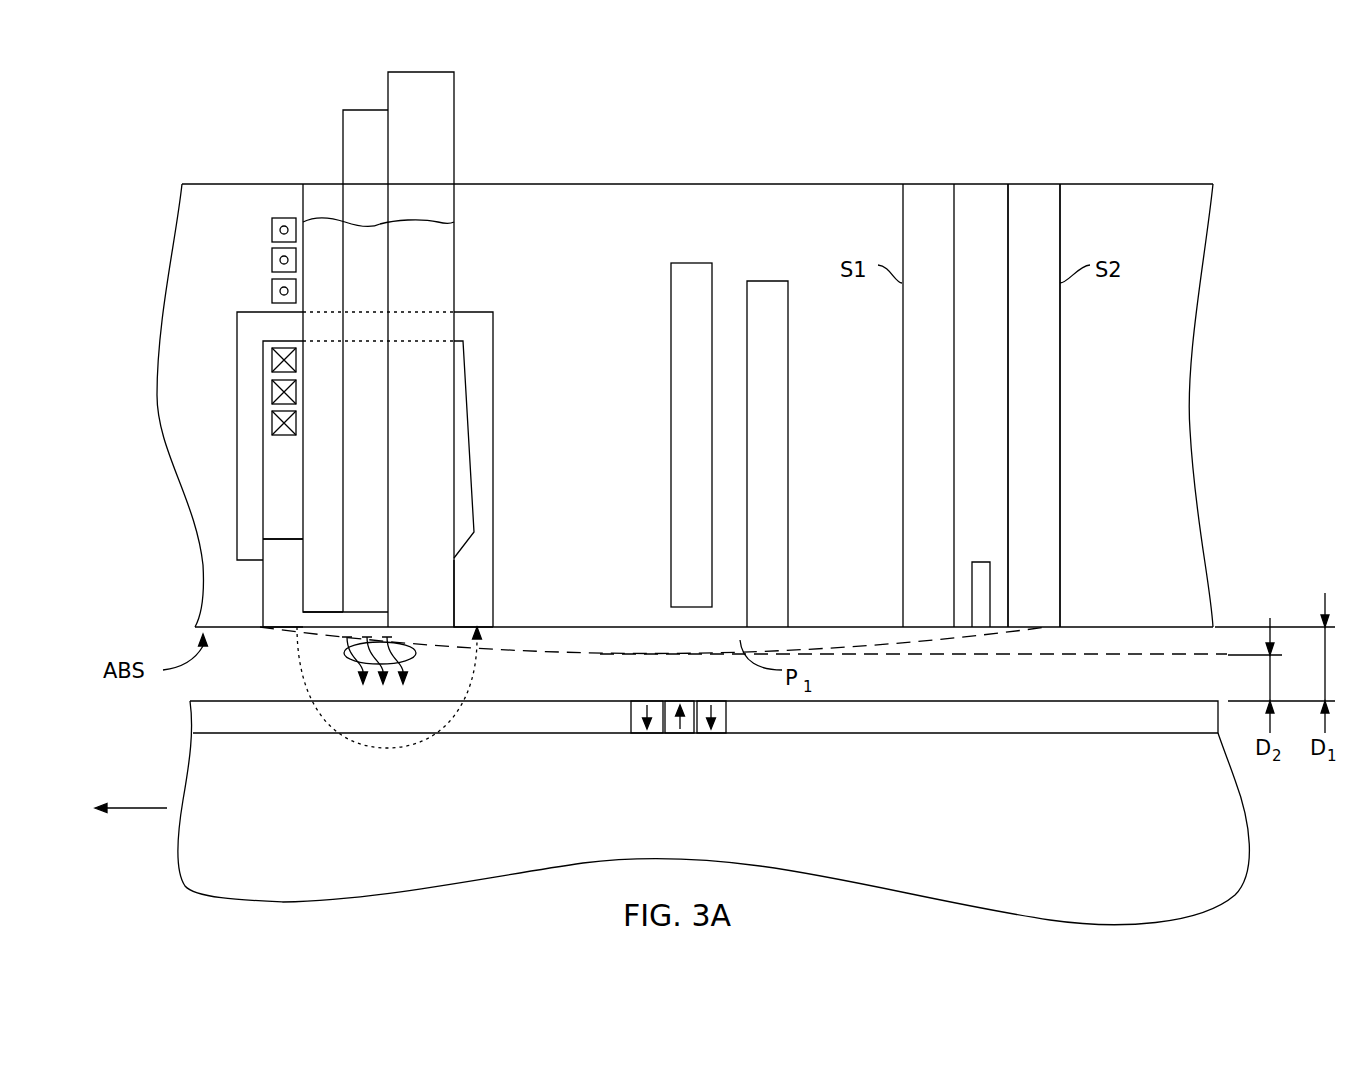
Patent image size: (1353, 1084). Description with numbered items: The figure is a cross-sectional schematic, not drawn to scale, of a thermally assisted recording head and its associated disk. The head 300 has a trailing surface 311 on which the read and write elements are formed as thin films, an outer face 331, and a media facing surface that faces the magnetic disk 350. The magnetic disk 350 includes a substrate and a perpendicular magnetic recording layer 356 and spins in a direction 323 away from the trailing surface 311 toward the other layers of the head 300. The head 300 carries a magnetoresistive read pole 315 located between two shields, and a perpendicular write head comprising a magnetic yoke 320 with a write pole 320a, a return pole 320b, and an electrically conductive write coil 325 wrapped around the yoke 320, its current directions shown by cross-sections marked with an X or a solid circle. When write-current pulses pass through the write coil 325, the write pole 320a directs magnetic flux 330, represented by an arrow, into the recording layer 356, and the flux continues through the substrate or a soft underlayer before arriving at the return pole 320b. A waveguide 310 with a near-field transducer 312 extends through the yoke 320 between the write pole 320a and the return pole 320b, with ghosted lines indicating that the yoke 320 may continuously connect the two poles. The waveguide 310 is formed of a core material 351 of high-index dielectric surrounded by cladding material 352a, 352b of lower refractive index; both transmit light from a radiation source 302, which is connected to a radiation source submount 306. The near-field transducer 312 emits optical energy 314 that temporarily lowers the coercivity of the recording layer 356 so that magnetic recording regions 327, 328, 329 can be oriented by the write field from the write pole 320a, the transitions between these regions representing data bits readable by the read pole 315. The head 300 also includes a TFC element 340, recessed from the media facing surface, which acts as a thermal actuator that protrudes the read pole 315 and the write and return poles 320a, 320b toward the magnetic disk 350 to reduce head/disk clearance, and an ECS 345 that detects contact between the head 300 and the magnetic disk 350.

The head 300 is at (147, 290).
The radiation source 302 is at (358, 112).
The radiation source submount 306 is at (452, 110).
The waveguide 310 is at (383, 226).
The trailing surface 311 is at (1050, 198).
The near-field transducer 312 is at (352, 617).
The optical energy 314 is at (413, 653).
The read pole 315 is at (972, 573).
The magnetic yoke 320 is at (236, 313).
The write pole 320a is at (262, 593).
The return pole 320b is at (495, 597).
The direction 323 is at (148, 810).
The write coil 325 is at (270, 220).
The magnetic recording region 327 is at (682, 733).
The magnetic recording region 328 is at (640, 733).
The magnetic recording region 329 is at (717, 733).
The magnetic flux 330 is at (403, 748).
The outer face 331 is at (170, 462).
The TFC element 340 is at (693, 262).
The ECS 345 is at (753, 281).
The magnetic disk 350 is at (1268, 830).
The core material 351 is at (384, 375).
The cladding material 352a is at (308, 218).
The cladding material 352b is at (442, 238).
The perpendicular magnetic recording layer 356 is at (190, 718).